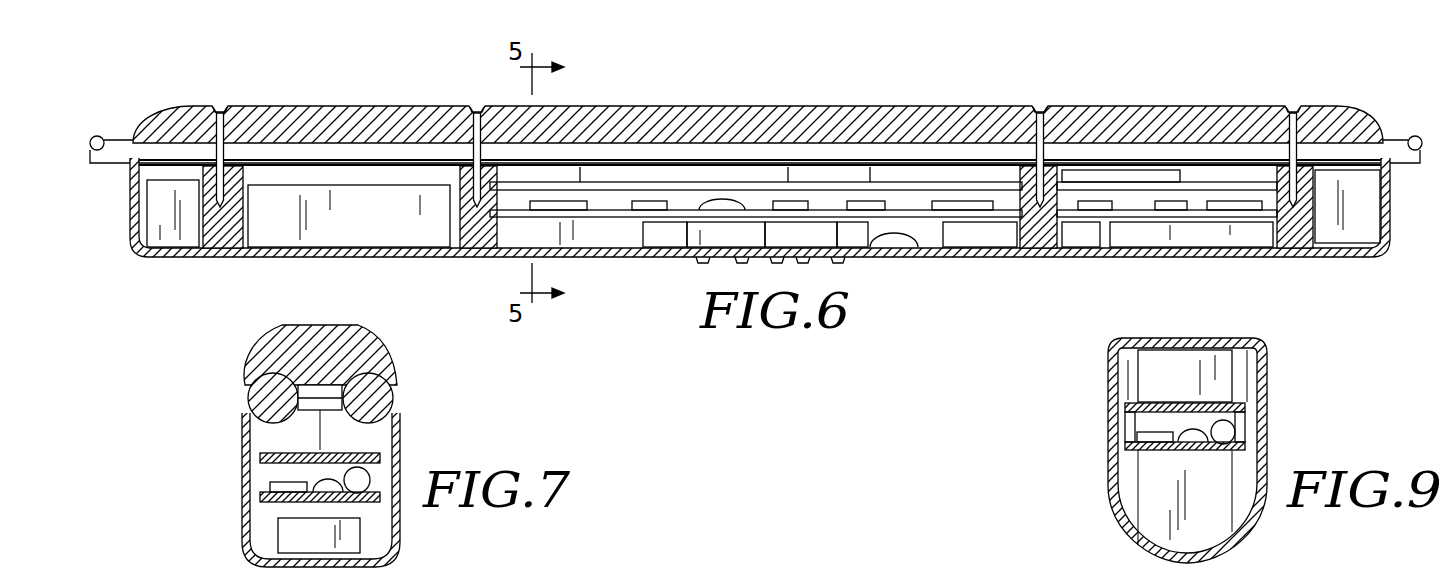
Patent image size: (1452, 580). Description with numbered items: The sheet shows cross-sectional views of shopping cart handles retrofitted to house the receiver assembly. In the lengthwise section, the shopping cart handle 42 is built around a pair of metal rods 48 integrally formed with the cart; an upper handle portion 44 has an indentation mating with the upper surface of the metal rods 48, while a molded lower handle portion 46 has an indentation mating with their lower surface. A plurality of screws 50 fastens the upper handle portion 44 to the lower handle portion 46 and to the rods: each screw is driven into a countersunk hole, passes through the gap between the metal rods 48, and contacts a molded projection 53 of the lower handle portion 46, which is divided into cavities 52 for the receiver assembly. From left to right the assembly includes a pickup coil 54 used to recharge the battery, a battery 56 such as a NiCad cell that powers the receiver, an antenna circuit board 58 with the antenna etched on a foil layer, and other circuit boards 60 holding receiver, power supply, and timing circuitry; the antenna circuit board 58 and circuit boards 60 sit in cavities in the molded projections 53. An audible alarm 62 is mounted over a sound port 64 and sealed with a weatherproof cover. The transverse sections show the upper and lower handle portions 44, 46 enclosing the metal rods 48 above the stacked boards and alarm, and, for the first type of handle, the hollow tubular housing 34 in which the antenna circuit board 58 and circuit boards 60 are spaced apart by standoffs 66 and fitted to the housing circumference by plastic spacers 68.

In FIG. 9, the hollow tubular housing 34 is at (1265, 368).
In FIG. 6, the shopping cart handle 42 is at (183, 96).
In FIG. 6, the upper handle portion 44 is at (885, 106).
In FIG. 7, the upper handle portion 44 is at (388, 364).
In FIG. 6, the lower handle portion 46 is at (178, 246).
In FIG. 7, the lower handle portion 46 is at (242, 444).
In FIG. 6, the metal rods 48 is at (1390, 138).
In FIG. 7, the metal rods 48 is at (248, 402).
In FIG. 6, the screws 50 is at (220, 108).
In FIG. 6, the cavities 52 is at (1082, 232).
In FIG. 6, the molded projections 53 is at (246, 214).
In FIG. 6, the pickup coil 54 is at (160, 232).
In FIG. 6, the battery 56 is at (373, 232).
In FIG. 6, the antenna circuit board 58 is at (699, 182).
In FIG. 7, the antenna circuit board 58 is at (368, 455).
In FIG. 9, the antenna circuit board 58 is at (1235, 405).
In FIG. 6, the circuit boards 60 is at (572, 218).
In FIG. 7, the circuit boards 60 is at (360, 494).
In FIG. 9, the circuit boards 60 is at (1153, 452).
In FIG. 6, the audible alarm 62 is at (917, 248).
In FIG. 7, the audible alarm 62 is at (282, 530).
In FIG. 6, the sound port 64 is at (722, 256).
In FIG. 9, the standoffs 66 is at (1125, 428).
In FIG. 9, the plastic spacers 68 is at (1172, 368).